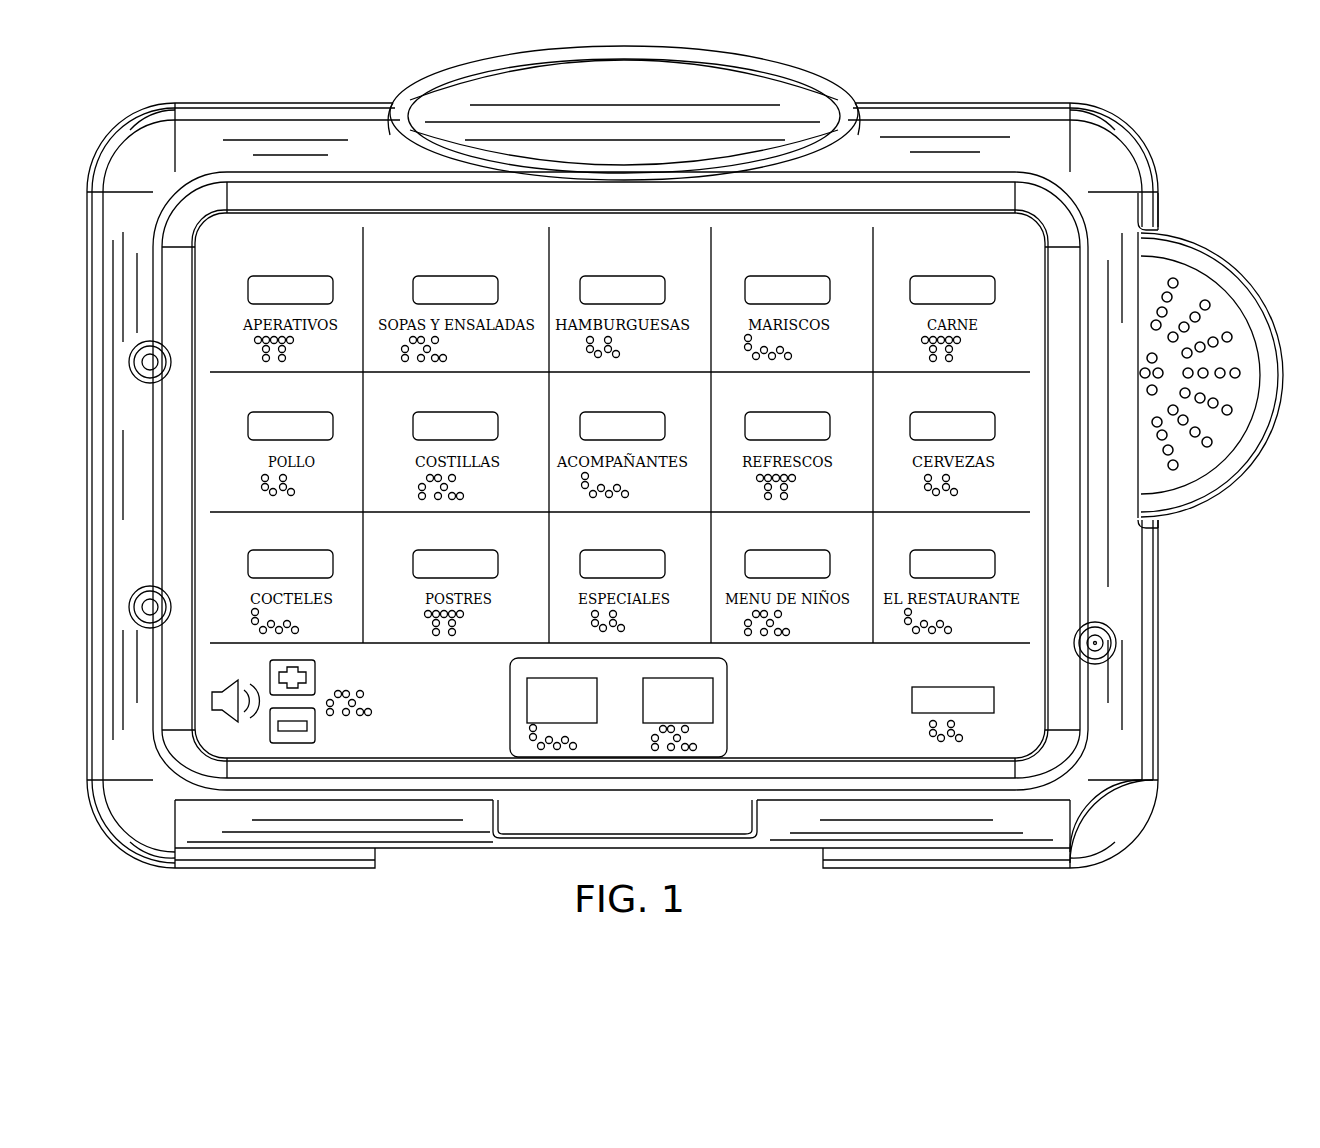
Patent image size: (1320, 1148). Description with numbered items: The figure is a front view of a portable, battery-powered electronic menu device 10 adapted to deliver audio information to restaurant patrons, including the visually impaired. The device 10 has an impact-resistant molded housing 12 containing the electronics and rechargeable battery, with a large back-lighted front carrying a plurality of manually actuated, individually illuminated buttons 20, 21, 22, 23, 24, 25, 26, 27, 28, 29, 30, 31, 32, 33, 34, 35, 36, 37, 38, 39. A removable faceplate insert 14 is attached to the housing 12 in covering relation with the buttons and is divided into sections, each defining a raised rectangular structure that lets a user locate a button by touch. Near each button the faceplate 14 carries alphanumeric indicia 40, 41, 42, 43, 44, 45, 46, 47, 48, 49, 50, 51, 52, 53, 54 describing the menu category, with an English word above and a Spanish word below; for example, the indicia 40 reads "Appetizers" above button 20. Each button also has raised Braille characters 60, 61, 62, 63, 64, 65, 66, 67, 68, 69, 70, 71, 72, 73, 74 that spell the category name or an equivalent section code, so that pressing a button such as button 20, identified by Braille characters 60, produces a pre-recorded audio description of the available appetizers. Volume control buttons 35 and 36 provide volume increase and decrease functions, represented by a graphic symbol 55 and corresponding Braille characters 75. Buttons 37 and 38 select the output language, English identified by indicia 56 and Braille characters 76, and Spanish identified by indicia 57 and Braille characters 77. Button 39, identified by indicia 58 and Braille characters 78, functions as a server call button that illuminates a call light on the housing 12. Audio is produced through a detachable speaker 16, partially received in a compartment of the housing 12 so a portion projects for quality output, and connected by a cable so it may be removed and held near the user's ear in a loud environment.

The electronic device 10 is at (1150, 82).
The housing 12 is at (1110, 173).
The faceplate insert 14 is at (1038, 552).
The speaker 16 is at (1215, 292).
The button 20 is at (290, 290).
The button 21 is at (455, 290).
The button 22 is at (622, 290).
The button 23 is at (787, 290).
The button 24 is at (952, 290).
The button 25 is at (290, 426).
The button 26 is at (455, 426).
The button 27 is at (622, 426).
The button 28 is at (787, 426).
The button 29 is at (952, 426).
The button 30 is at (290, 564).
The button 31 is at (455, 564).
The button 32 is at (622, 564).
The button 33 is at (787, 564).
The button 34 is at (952, 564).
The volume control button 35 is at (315, 671).
The volume control button 36 is at (315, 729).
The button 37 is at (562, 700).
The button 38 is at (678, 700).
The button 39 is at (953, 700).
The indicia 40 is at (310, 245).
The indicia 41 is at (485, 245).
The indicia 42 is at (650, 245).
The indicia 43 is at (815, 245).
The indicia 44 is at (980, 245).
The indicia 45 is at (250, 396).
The indicia 46 is at (478, 398).
The indicia 47 is at (640, 398).
The indicia 48 is at (838, 398).
The indicia 49 is at (983, 398).
The indicia 50 is at (250, 538).
The indicia 51 is at (498, 536).
The indicia 52 is at (662, 536).
The indicia 53 is at (836, 536).
The indicia 54 is at (915, 536).
The graphic symbol 55 is at (233, 690).
The indicia 56 is at (518, 658).
The indicia 57 is at (722, 658).
The indicia 58 is at (880, 667).
The Braille characters 60 is at (305, 357).
The Braille characters 61 is at (476, 358).
The Braille characters 62 is at (642, 358).
The Braille characters 63 is at (814, 358).
The Braille characters 64 is at (980, 358).
The Braille characters 65 is at (262, 486).
The Braille characters 66 is at (488, 490).
The Braille characters 67 is at (655, 490).
The Braille characters 68 is at (814, 490).
The Braille characters 69 is at (982, 490).
The Braille characters 70 is at (312, 620).
The Braille characters 71 is at (475, 625).
The Braille characters 72 is at (654, 625).
The Braille characters 73 is at (820, 625).
The Braille characters 74 is at (985, 625).
The Braille characters 75 is at (392, 698).
The Braille characters 76 is at (510, 728).
The Braille characters 77 is at (727, 718).
The Braille characters 78 is at (905, 718).